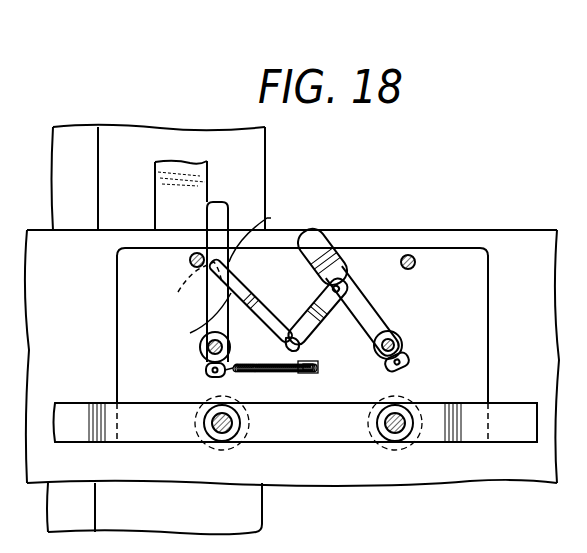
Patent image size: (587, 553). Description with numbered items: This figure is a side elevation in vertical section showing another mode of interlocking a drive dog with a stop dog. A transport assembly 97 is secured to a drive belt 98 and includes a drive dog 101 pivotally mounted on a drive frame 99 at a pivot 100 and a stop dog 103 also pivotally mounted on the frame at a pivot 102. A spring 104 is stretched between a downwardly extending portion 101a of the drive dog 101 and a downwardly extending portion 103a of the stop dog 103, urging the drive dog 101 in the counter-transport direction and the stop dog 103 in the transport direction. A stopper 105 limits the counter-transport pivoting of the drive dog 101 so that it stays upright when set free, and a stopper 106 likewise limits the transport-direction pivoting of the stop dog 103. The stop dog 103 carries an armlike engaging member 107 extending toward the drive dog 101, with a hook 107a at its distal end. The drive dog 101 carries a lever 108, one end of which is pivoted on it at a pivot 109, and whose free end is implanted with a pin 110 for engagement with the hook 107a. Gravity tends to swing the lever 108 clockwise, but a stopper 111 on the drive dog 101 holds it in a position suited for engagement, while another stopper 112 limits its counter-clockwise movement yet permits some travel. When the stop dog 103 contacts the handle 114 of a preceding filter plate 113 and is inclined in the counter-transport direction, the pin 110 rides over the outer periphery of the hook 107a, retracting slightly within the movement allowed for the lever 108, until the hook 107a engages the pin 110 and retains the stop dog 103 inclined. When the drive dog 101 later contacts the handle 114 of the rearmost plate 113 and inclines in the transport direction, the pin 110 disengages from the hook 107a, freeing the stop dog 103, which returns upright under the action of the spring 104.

The transport assembly 97 is at (384, 246).
The drive belt 98 is at (518, 442).
The drive frame 99 is at (490, 304).
The pivot of drive dog 100 is at (207, 346).
The drive dog 101 is at (219, 205).
The downwardly extending portion of drive dog 101a is at (208, 373).
The pivot of stop dog 102 is at (401, 344).
The stop dog 103 is at (320, 246).
The downwardly extending portion of stop dog 103a is at (407, 364).
The spring 104 is at (337, 372).
The stopper for drive dog 105 is at (190, 263).
The stopper for stop dog 106 is at (412, 256).
The engaging member 107 is at (351, 294).
The hook 107a is at (285, 330).
The lever 108 is at (247, 302).
The pivot of lever 109 is at (187, 292).
The pin 110 is at (300, 345).
The stopper for lever 111 is at (194, 322).
The another stopper 112 is at (266, 230).
The filter plate 113 is at (262, 155).
The handle 114 is at (160, 192).